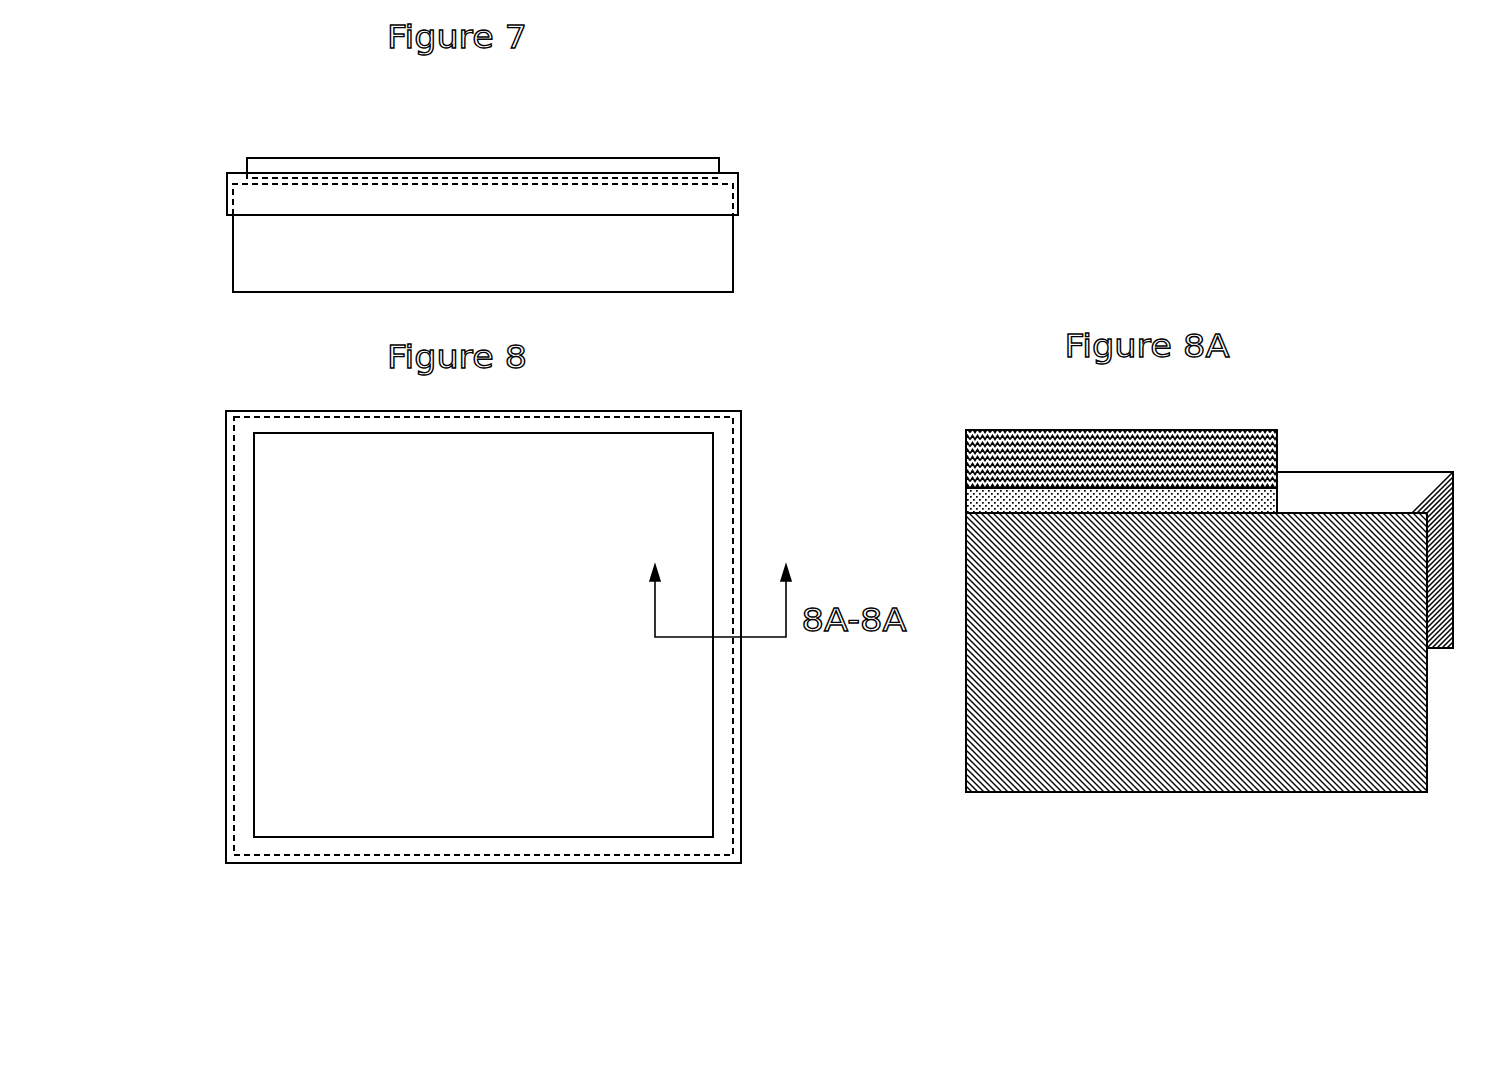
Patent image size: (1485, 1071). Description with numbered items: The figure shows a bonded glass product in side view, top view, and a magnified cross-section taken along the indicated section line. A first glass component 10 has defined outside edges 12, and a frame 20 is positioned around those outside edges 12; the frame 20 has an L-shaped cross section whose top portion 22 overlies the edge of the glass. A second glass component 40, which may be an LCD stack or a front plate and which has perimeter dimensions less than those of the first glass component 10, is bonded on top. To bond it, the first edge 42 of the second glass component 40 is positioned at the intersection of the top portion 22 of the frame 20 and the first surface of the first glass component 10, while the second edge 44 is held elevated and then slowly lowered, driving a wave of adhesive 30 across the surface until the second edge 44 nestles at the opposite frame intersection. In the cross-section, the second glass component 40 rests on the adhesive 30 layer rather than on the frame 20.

In FIG. 7, the first glass component 10 is at (263, 278).
In FIG. 7, the outside edges 12 is at (733, 192).
In FIG. 8, the outside edges 12 is at (483, 637).
In FIG. 8A, the outside edges 12 is at (1427, 767).
In FIG. 7, the frame 20 is at (522, 197).
In FIG. 8, the frame 20 is at (494, 675).
In FIG. 8A, the frame 20 is at (1086, 633).
In FIG. 8, the top portion 22 is at (358, 850).
In FIG. 8A, the adhesive 30 is at (966, 493).
In FIG. 7, the second glass component 40 is at (608, 158).
In FIG. 8, the second glass component 40 is at (287, 507).
In FIG. 8A, the second glass component 40 is at (995, 430).
In FIG. 7, the first edge 42 is at (247, 170).
In FIG. 8, the first edge 42 is at (255, 675).
In FIG. 7, the second edge 44 is at (720, 167).
In FIG. 8, the second edge 44 is at (714, 708).
In FIG. 8A, the second edge 44 is at (1277, 447).